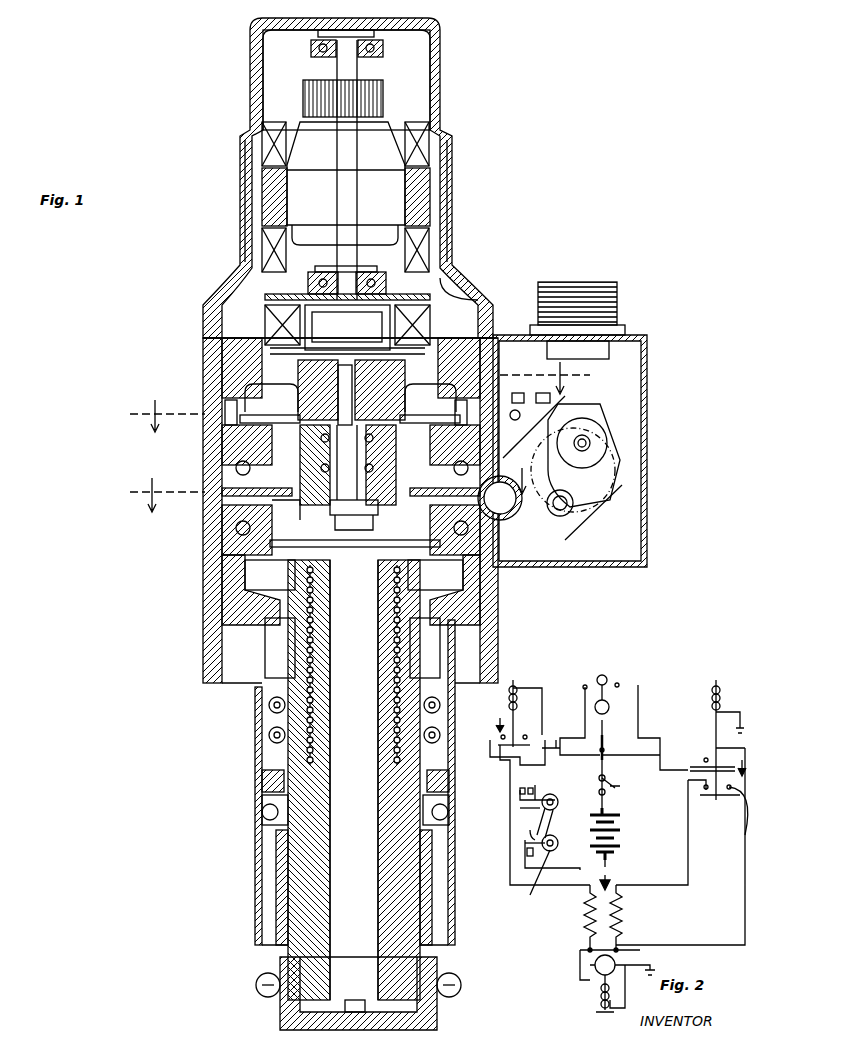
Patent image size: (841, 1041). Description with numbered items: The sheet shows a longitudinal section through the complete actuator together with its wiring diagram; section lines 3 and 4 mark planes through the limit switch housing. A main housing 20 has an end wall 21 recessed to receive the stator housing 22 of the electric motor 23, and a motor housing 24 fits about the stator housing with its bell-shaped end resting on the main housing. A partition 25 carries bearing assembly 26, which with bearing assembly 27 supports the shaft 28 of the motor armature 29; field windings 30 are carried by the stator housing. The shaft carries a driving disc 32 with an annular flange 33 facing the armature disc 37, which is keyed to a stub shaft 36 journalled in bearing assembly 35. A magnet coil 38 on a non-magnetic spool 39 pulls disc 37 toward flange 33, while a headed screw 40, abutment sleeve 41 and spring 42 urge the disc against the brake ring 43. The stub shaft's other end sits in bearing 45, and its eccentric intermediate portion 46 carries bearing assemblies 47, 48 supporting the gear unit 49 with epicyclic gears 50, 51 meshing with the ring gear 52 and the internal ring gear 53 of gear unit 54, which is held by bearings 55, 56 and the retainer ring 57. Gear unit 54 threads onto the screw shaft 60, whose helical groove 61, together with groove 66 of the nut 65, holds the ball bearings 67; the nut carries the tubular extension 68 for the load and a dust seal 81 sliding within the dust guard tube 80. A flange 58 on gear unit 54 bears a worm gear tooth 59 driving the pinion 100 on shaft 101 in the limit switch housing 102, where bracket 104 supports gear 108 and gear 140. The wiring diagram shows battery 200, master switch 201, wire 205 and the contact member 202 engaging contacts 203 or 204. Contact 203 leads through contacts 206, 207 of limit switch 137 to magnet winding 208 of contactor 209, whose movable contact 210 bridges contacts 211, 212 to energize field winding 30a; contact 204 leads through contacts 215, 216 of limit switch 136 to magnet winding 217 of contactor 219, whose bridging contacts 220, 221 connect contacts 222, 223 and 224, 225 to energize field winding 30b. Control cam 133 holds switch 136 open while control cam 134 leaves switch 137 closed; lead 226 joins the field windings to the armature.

In FIG. 1, the section line 3 is at (332, 482).
In FIG. 1, the section line 4 is at (360, 396).
In FIG. 1, the main housing 20 is at (225, 378).
In FIG. 1, the end wall 21 is at (240, 350).
In FIG. 1, the stator housing 22 is at (262, 330).
In FIG. 1, the electric motor 23 is at (288, 73).
In FIG. 1, the motor housing 24 is at (452, 180).
In FIG. 1, the partition 25 is at (415, 296).
In FIG. 1, the bearing assembly 26 is at (322, 272).
In FIG. 1, the bearing assembly 27 is at (383, 50).
In FIG. 1, the armature shaft 28 is at (342, 258).
In FIG. 1, the motor armature 29 is at (368, 145).
In FIG. 2, the motor armature 29 is at (585, 963).
In FIG. 1, the field windings 30 is at (420, 145).
In FIG. 2, the field winding 30a is at (582, 910).
In FIG. 2, the field winding 30b is at (625, 915).
In FIG. 1, the driving disc 32 is at (265, 318).
In FIG. 1, the annular flange 33 is at (316, 352).
In FIG. 1, the bearing assembly 35 is at (290, 398).
In FIG. 1, the stub shaft 36 is at (380, 418).
In FIG. 1, the armature disc 37 is at (440, 360).
In FIG. 1, the magnet coil 38 is at (438, 292).
In FIG. 2, the magnet coil 38 is at (598, 996).
In FIG. 1, the non-magnetic spool 39 is at (430, 318).
In FIG. 1, the headed screw 40 is at (350, 350).
In FIG. 1, the abutment sleeve 41 is at (365, 352).
In FIG. 1, the spring 42 is at (345, 425).
In FIG. 1, the brake ring 43 is at (310, 362).
In FIG. 1, the bearing 45 is at (340, 548).
In FIG. 1, the eccentric intermediate portion 46 is at (348, 560).
In FIG. 1, the bearing assembly 47 is at (374, 438).
In FIG. 1, the bearing assembly 48 is at (325, 478).
In FIG. 1, the gear unit 49 is at (418, 430).
In FIG. 1, the epicyclic gear 50 is at (455, 435).
In FIG. 1, the epicyclic gear 51 is at (300, 440).
In FIG. 1, the ring gear 52 is at (230, 440).
In FIG. 1, the internal ring gear 53 is at (232, 496).
In FIG. 1, the gear unit 54 is at (280, 562).
In FIG. 1, the bearing 55 is at (236, 470).
In FIG. 1, the bearing 56 is at (238, 552).
In FIG. 1, the retainer ring 57 is at (230, 612).
In FIG. 1, the flange 58 is at (236, 530).
In FIG. 1, the worm gear tooth 59 is at (270, 502).
In FIG. 1, the screw shaft 60 is at (330, 650).
In FIG. 1, the helical groove 61 is at (363, 560).
In FIG. 1, the nut 65 is at (425, 690).
In FIG. 1, the helical groove 66 is at (410, 660).
In FIG. 1, the ball bearings 67 is at (312, 705).
In FIG. 1, the tubular extension 68 is at (280, 886).
In FIG. 1, the dust guard tube 80 is at (255, 728).
In FIG. 1, the dust seal 81 is at (262, 784).
In FIG. 1, the pinion 100 is at (522, 560).
In FIG. 1, the shaft 101 is at (520, 505).
In FIG. 1, the limit switch housing 102 is at (580, 564).
In FIG. 1, the bracket 104 is at (604, 500).
In FIG. 1, the gear 108 is at (583, 533).
In FIG. 2, the control cam 133 is at (546, 808).
In FIG. 2, the control cam 134 is at (530, 895).
In FIG. 1, the limit switch 136 is at (566, 402).
In FIG. 2, the limit switch 136 is at (525, 805).
In FIG. 2, the limit switch 137 is at (528, 832).
In FIG. 1, the gear 140 is at (614, 438).
In FIG. 2, the battery 200 is at (615, 838).
In FIG. 2, the master switch 201 is at (612, 790).
In FIG. 2, the manually operable contact member 202 is at (596, 708).
In FIG. 2, the stationary contact 203 is at (584, 684).
In FIG. 2, the stationary contact 204 is at (619, 682).
In FIG. 2, the wire 205 is at (602, 738).
In FIG. 2, the contact 206 is at (530, 786).
In FIG. 2, the contact 207 is at (518, 796).
In FIG. 2, the magnet winding 208 is at (509, 702).
In FIG. 2, the contactor 209 is at (521, 701).
In FIG. 2, the movable contact 210 is at (498, 748).
In FIG. 2, the stationary contact 211 is at (526, 735).
In FIG. 2, the stationary contact 212 is at (501, 735).
In FIG. 2, the contact 215 is at (527, 858).
In FIG. 2, the contact 216 is at (525, 845).
In FIG. 2, the magnet winding 217 is at (711, 700).
In FIG. 2, the contactor 219 is at (719, 727).
In FIG. 2, the movable bridging contact 220 is at (735, 740).
In FIG. 2, the movable bridging contact 221 is at (706, 797).
In FIG. 2, the stationary contact 222 is at (706, 757).
In FIG. 2, the stationary contact 223 is at (728, 762).
In FIG. 2, the stationary contact 224 is at (703, 789).
In FIG. 2, the stationary contact 225 is at (745, 830).
In FIG. 2, the lead 226 is at (620, 950).